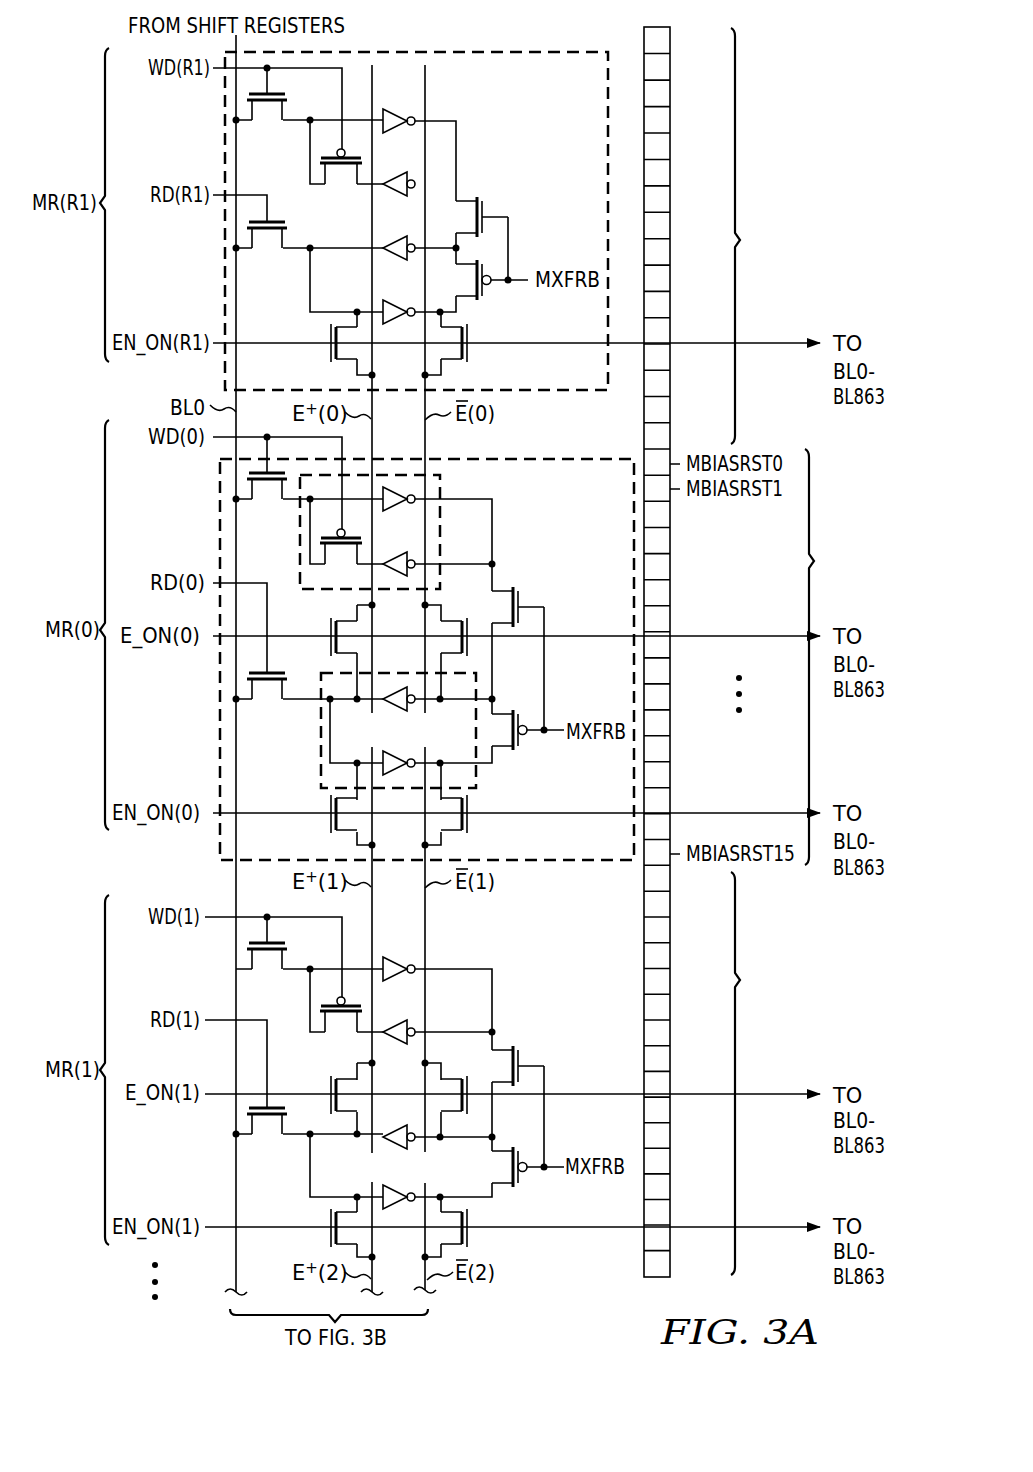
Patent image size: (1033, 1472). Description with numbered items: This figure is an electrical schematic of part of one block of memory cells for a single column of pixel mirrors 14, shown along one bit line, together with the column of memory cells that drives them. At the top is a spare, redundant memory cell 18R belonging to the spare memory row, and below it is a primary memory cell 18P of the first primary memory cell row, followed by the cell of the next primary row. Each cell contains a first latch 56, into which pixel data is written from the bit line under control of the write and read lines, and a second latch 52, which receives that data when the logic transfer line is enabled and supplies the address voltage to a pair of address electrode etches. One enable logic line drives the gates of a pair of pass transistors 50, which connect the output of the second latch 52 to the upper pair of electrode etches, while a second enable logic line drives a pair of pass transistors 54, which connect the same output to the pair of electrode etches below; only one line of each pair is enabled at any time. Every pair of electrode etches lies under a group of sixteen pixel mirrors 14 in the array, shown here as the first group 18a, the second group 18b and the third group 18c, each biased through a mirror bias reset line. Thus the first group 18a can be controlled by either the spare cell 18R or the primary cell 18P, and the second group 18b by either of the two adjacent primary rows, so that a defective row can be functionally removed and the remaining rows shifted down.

The pixel mirror 14 is at (672, 42).
The spare memory cell 18R is at (528, 52).
The primary memory cell 18P is at (600, 457).
The first group of sixteen pixel mirrors 18a is at (755, 236).
The second group of sixteen pixel mirrors 18b is at (829, 657).
The third group of sixteen pixel mirrors 18c is at (754, 1073).
The pass transistor 50 is at (322, 628).
The second latch 52 is at (320, 718).
The pass transistor 54 is at (296, 334).
The first latch 56 is at (440, 483).